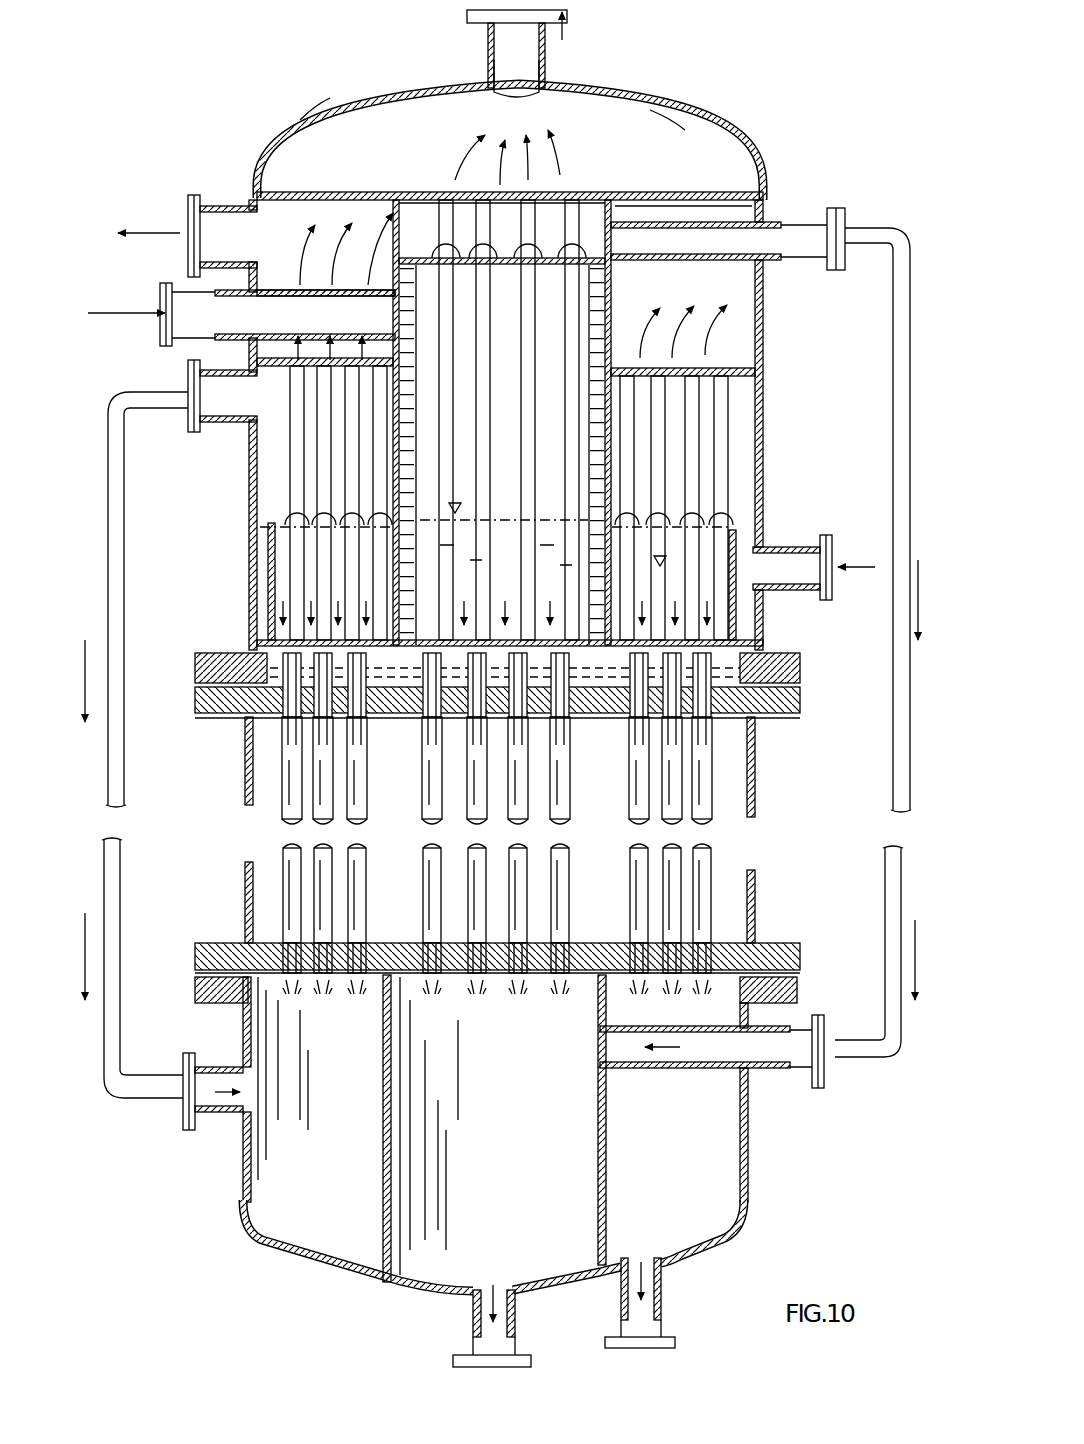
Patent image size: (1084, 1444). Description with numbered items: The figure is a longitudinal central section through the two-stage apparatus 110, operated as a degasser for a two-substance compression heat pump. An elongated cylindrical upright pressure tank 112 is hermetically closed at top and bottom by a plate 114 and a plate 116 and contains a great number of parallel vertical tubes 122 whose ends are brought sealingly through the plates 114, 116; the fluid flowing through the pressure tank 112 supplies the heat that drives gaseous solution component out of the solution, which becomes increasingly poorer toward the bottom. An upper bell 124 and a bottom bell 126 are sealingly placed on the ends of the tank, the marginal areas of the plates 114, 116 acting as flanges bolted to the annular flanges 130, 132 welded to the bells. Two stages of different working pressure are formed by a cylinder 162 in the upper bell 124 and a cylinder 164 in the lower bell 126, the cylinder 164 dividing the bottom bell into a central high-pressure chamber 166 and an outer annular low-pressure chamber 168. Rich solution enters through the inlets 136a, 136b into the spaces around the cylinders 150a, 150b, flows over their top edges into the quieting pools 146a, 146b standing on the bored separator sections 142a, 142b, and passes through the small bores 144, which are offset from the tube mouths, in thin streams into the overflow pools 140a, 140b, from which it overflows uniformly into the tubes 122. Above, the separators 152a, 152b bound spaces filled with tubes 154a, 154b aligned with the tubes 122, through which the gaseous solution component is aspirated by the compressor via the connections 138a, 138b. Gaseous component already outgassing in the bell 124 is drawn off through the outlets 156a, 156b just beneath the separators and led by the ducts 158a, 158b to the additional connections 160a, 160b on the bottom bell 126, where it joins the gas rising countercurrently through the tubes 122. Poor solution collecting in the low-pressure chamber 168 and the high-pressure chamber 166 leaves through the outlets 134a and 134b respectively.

The two-stage apparatus 110 is at (135, 1160).
The pressure tank 112 is at (245, 890).
The upper plate 114 is at (785, 718).
The bottom plate 116 is at (804, 965).
The tubes 122 is at (284, 846).
The upper bell 124 is at (250, 531).
The bottom bell 126 is at (745, 1193).
The annular flange 130 is at (800, 680).
The annular flange 132 is at (197, 1008).
The outlet 134a is at (628, 1327).
The outlet 134b is at (472, 1327).
The inlet 136a is at (822, 592).
The inlet 136b is at (163, 344).
The connection 138a is at (210, 207).
The connection 138b is at (488, 45).
The overflow pool 140a is at (252, 723).
The overflow pool 140b is at (583, 717).
The separator section 142a is at (755, 760).
The separator section 142b is at (397, 717).
The bores 144 is at (270, 630).
The quieting pool 146a is at (268, 590).
The quieting pool 146b is at (590, 513).
The cylinder 150a is at (753, 540).
The cylinder 150b is at (618, 285).
The separator 152a is at (748, 352).
The separator 152b is at (685, 195).
The tubes 154a is at (683, 455).
The tubes 154b is at (578, 200).
The outlet 156a is at (216, 435).
The outlet 156b is at (812, 221).
The duct 158a is at (113, 840).
The duct 158b is at (890, 810).
The connection 160a is at (213, 1130).
The connection 160b is at (788, 1075).
The cylinder 162 is at (325, 175).
The cylinder 164 is at (607, 1138).
The high-pressure chamber 166 is at (525, 1158).
The low-pressure chamber 168 is at (348, 1158).